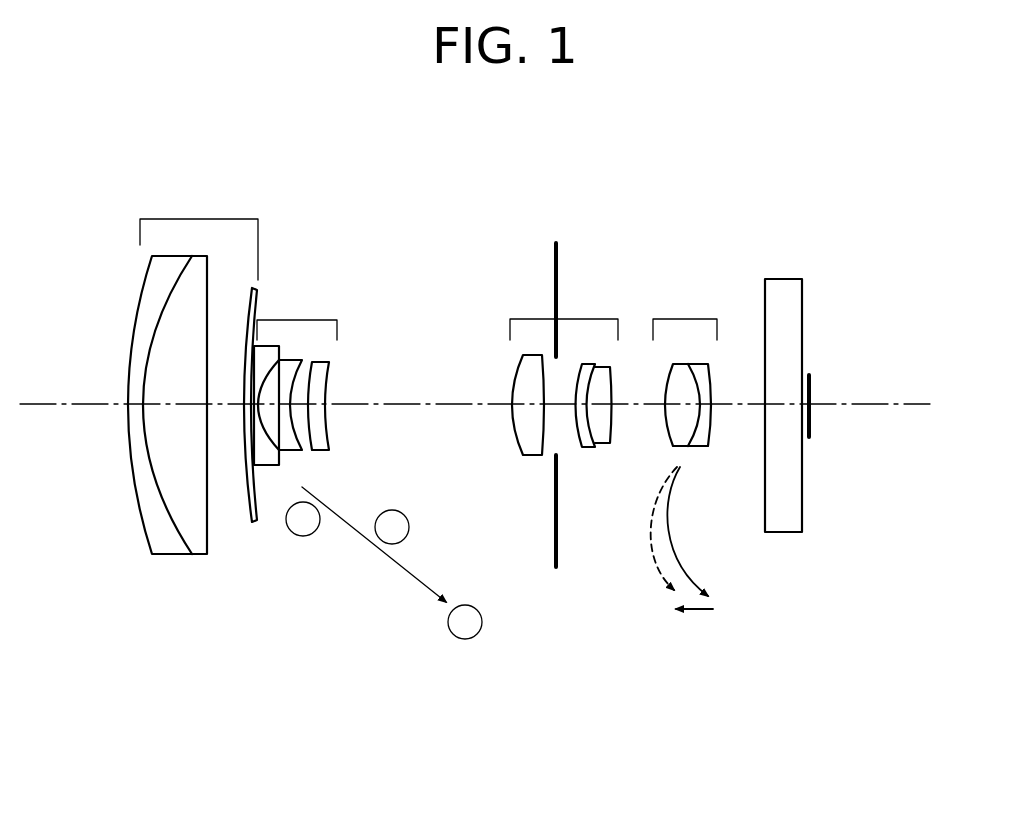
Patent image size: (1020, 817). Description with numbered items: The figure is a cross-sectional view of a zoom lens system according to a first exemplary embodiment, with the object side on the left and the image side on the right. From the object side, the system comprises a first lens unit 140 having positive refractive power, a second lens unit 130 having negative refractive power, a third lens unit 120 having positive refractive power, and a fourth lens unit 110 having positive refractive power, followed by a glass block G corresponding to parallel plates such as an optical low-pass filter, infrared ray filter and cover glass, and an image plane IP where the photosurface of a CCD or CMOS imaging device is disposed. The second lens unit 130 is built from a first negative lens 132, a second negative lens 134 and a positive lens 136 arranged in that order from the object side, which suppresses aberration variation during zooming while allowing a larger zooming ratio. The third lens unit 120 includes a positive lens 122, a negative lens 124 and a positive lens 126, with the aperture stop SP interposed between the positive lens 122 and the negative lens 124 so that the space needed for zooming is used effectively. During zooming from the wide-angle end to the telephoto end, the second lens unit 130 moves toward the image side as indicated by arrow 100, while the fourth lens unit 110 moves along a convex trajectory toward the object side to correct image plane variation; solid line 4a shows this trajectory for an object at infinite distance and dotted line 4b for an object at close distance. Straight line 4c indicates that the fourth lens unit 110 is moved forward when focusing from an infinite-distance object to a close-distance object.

The first lens unit L1 140 is at (152, 218).
The second lens unit L2 130 is at (333, 419).
The negative lens 2G1 132 is at (268, 466).
The negative lens 2G2 134 is at (292, 453).
The positive lens 2G3 136 is at (330, 372).
The arrow 100 is at (377, 547).
The third lens unit L3 120 is at (572, 377).
The positive lens 3G1 122 is at (530, 458).
The negative lens 3G2 124 is at (593, 448).
The positive lens 3G3 126 is at (610, 417).
The fourth lens unit L4 110 is at (660, 318).
The aperture stop SP is at (558, 262).
The glass block G is at (784, 290).
The image plane IP is at (812, 392).
The solid line 4a is at (672, 545).
The dotted line 4b is at (647, 548).
The straight line 4c is at (698, 612).